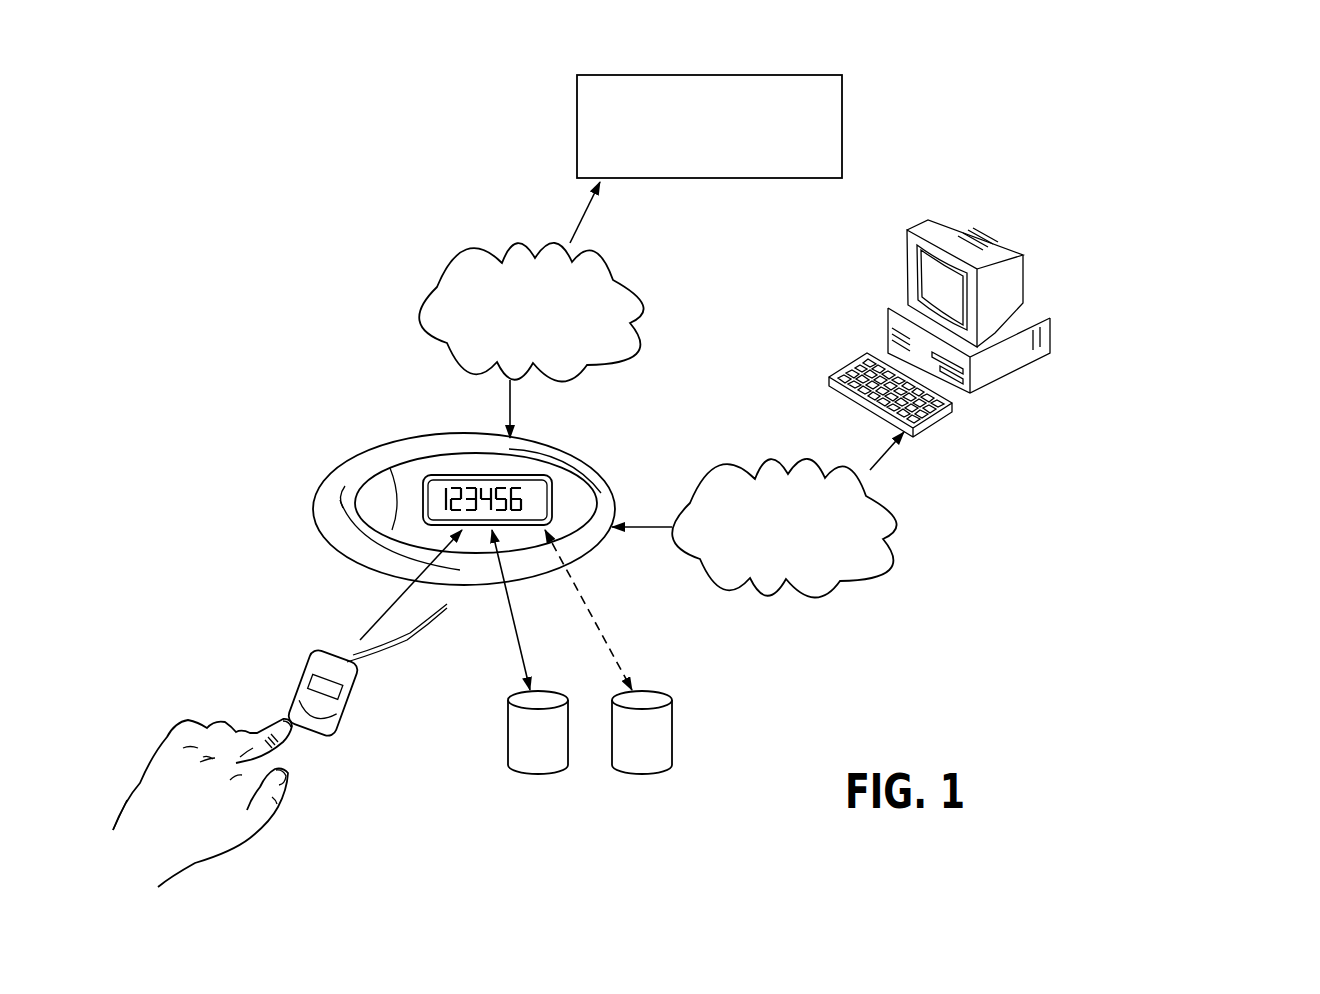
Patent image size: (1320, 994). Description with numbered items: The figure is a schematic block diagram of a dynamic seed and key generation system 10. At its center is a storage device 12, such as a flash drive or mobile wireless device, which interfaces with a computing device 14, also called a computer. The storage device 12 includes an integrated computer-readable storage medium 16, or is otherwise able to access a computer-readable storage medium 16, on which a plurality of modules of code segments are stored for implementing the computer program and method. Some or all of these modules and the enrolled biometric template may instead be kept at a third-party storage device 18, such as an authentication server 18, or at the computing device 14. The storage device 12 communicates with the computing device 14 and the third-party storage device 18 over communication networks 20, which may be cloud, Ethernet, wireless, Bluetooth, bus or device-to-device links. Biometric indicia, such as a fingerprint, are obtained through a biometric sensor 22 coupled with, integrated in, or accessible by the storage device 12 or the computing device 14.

The dynamic seed and key generation system 10 is at (1178, 286).
The storage device 12 is at (388, 449).
The computing device 14 is at (990, 233).
The computer-readable storage medium 16 is at (543, 766).
The third-party storage device 18 is at (818, 74).
The communication network 20 is at (460, 258).
The biometric sensor 22 is at (322, 640).